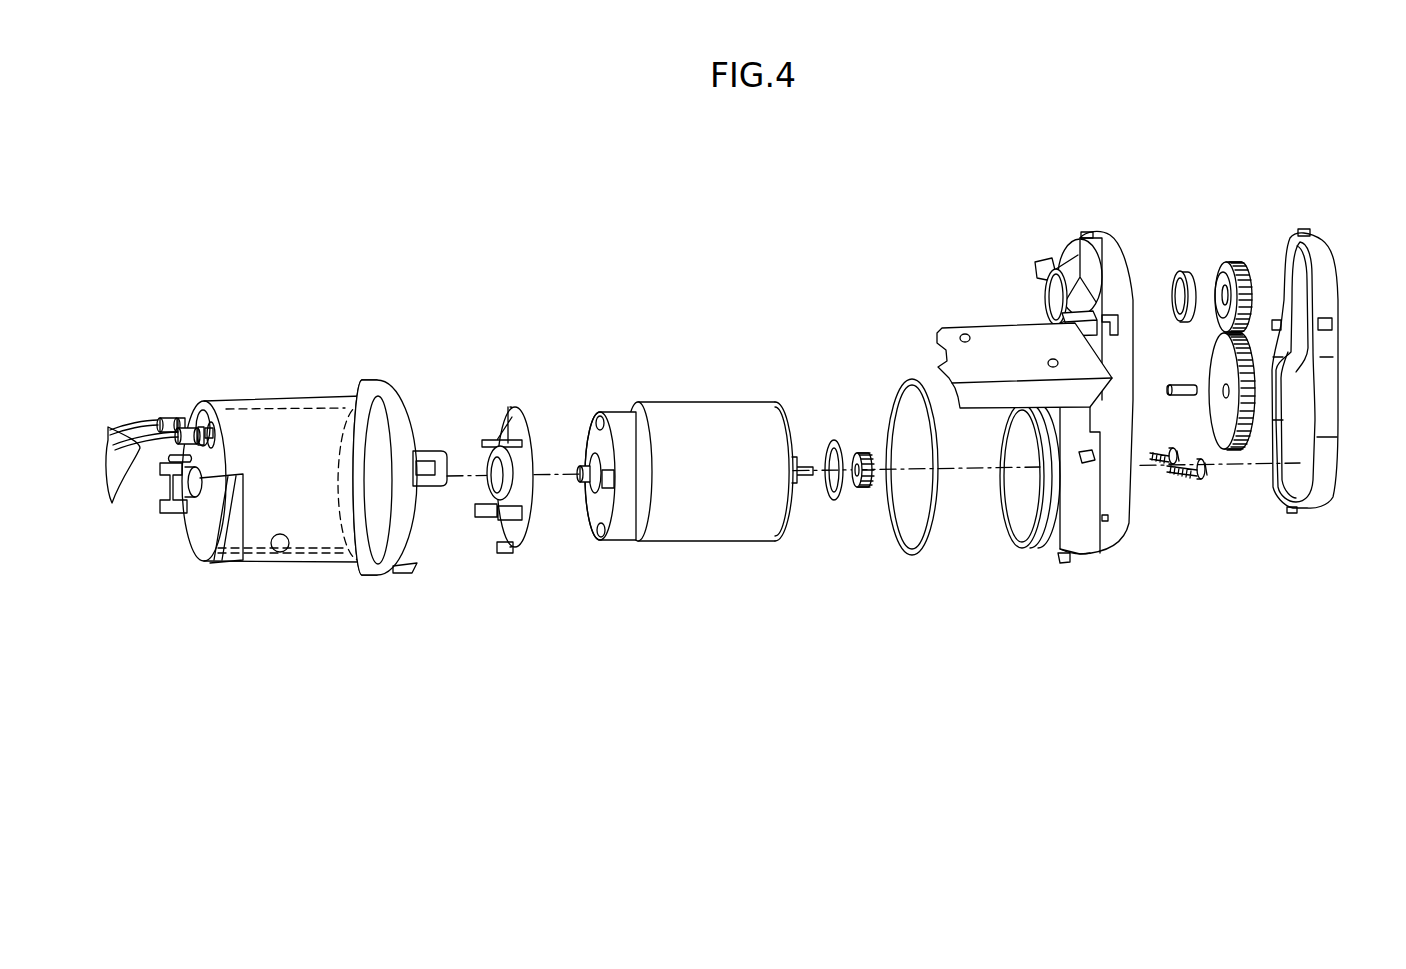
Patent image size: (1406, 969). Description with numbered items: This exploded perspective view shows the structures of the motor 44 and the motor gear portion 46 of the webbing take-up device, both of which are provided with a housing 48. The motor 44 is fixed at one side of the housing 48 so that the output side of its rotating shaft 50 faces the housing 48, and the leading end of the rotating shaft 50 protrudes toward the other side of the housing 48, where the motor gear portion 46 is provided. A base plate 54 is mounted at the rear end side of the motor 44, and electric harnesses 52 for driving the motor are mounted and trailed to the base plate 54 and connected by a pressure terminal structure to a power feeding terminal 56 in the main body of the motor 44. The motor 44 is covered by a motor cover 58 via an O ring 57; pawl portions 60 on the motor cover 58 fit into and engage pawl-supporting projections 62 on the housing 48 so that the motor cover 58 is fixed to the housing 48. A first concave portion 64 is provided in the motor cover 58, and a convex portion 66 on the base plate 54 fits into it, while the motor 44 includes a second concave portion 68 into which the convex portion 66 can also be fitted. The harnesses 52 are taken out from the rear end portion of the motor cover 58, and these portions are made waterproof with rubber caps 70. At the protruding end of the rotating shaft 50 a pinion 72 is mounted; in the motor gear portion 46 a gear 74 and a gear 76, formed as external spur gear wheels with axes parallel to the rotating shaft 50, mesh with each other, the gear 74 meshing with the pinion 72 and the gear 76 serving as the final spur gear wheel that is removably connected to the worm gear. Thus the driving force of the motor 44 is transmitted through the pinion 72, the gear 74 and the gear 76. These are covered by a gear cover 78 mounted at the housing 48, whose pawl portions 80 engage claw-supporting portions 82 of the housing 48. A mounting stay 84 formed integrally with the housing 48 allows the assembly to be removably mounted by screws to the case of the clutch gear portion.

The motor 44 is at (692, 402).
The motor gear portion 46 is at (1187, 212).
The housing 48 is at (1090, 555).
The rotating shaft 50 is at (808, 480).
The electric harnesses 52 is at (109, 499).
The base plate 54 is at (510, 407).
The power feeding terminal 56 is at (586, 484).
The O ring 57 is at (913, 556).
The motor cover 58 is at (273, 397).
The pawl portions 60 is at (434, 451).
The pawl-supporting projections 62 is at (1092, 459).
The first concave portion 64 is at (284, 552).
The convex portion 66 is at (505, 553).
The second concave portion 68 is at (599, 537).
The rubber caps 70 is at (183, 418).
The pinion 72 is at (862, 452).
The gear 74 is at (1236, 450).
The gear 76 is at (1226, 262).
The gear cover 78 is at (1340, 380).
The pawl portions 80 is at (1304, 229).
The claw-supporting portions 82 is at (1087, 232).
The mounting stay 84 is at (1006, 347).